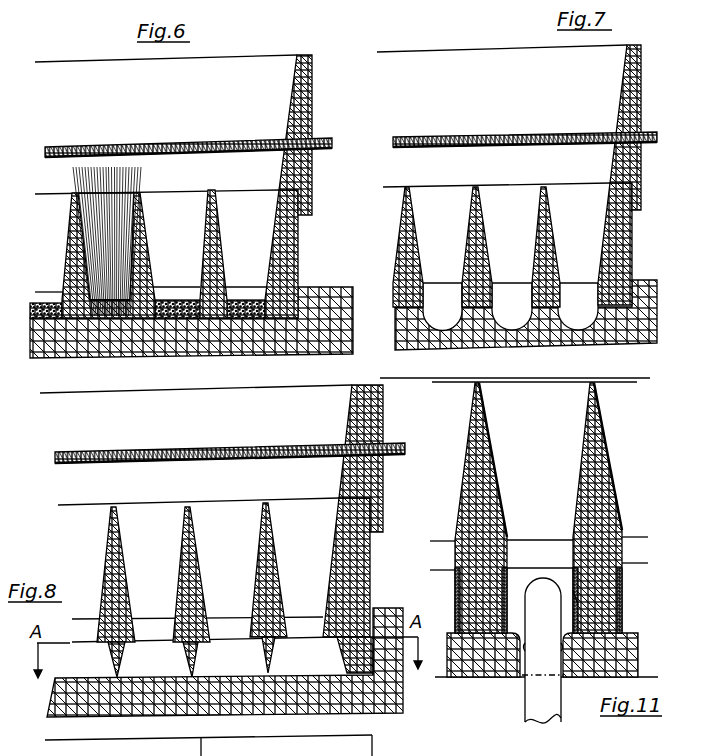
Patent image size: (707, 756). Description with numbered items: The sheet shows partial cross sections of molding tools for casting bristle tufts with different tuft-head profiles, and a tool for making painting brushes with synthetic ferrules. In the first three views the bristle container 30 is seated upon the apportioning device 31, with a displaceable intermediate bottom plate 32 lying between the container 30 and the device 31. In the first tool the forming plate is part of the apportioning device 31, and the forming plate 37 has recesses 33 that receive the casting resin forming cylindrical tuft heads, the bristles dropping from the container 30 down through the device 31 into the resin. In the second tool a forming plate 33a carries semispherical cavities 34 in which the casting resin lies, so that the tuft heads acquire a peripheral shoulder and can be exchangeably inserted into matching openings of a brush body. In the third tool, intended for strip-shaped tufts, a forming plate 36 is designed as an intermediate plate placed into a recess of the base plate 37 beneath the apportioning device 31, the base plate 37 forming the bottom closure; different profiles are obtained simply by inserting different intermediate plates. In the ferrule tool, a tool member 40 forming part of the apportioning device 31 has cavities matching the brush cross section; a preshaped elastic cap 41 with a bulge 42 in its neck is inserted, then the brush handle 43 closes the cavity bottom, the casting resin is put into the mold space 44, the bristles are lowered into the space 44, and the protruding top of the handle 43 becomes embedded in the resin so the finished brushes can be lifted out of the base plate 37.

In FIG. 6, the bristle container 30 is at (312, 92).
In FIG. 7, the bristle container 30 is at (630, 85).
In FIG. 8, the bristle container 30 is at (383, 415).
In FIG. 6, the apportioning device 31 is at (300, 245).
In FIG. 7, the apportioning device 31 is at (620, 238).
In FIG. 8, the apportioning device 31 is at (362, 580).
In FIG. 11, the apportioning device 31 is at (598, 452).
In FIG. 6, the displaceable intermediate bottom plate 32 is at (332, 142).
In FIG. 7, the displaceable intermediate bottom plate 32 is at (563, 133).
In FIG. 8, the displaceable intermediate bottom plate 32 is at (320, 447).
In FIG. 6, the recesses 33 is at (182, 303).
In FIG. 7, the forming plate 33a is at (620, 333).
In FIG. 7, the semispherical cavities 34 is at (438, 320).
In FIG. 8, the forming plate 36 is at (383, 648).
In FIG. 6, the base plate 37 is at (347, 303).
In FIG. 8, the base plate 37 is at (398, 695).
In FIG. 11, the base plate 37 is at (458, 667).
In FIG. 11, the tool member 40 is at (570, 567).
In FIG. 11, the preshaped cap 41 is at (575, 597).
In FIG. 11, the bulge 42 is at (556, 647).
In FIG. 11, the brush handle 43 is at (530, 699).
In FIG. 11, the mold space 44 is at (512, 588).